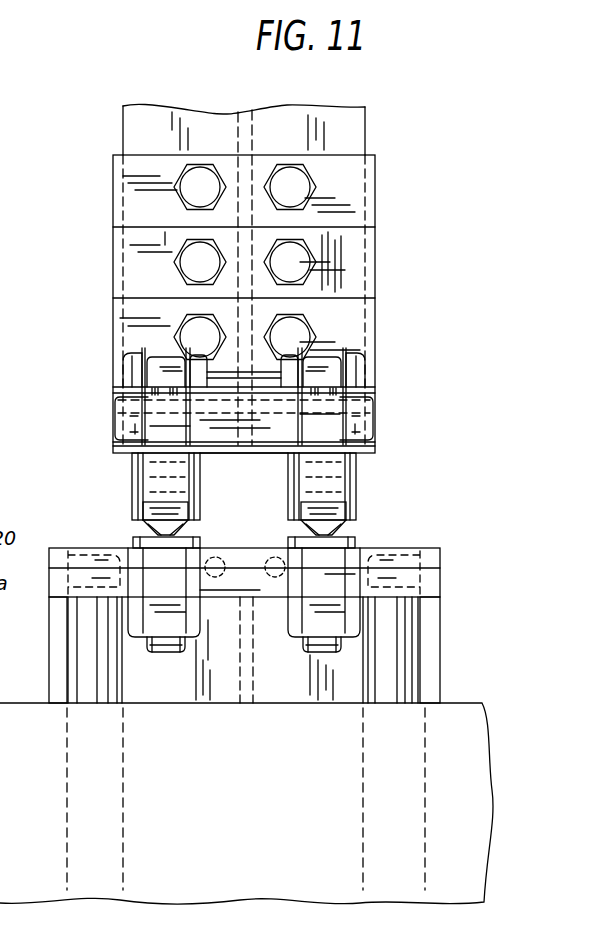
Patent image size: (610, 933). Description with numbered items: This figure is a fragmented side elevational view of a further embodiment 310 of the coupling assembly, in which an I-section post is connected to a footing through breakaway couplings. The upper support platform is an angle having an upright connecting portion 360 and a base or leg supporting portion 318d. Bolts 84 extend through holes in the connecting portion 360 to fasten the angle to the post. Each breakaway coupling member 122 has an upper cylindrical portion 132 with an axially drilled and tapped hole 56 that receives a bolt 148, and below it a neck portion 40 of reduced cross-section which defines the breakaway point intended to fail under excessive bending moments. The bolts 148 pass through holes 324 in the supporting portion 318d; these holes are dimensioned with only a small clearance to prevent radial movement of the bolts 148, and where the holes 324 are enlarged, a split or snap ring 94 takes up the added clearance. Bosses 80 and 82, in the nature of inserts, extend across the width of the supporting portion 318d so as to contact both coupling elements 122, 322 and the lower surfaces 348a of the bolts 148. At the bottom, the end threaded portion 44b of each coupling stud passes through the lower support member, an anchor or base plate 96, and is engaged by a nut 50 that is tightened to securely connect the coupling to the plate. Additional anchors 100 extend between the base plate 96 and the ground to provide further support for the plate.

The coupling assembly embodiment 310 is at (406, 315).
The upright connecting portion 360 is at (113, 237).
The bolts 84 is at (212, 184).
The bolt 148 is at (128, 355).
The lower surfaces of the bolts 348a is at (113, 377).
The boss 80 is at (373, 379).
The split or snap ring 94 is at (133, 413).
The base or leg supporting portion 318d is at (115, 421).
The holes 324 is at (115, 436).
The upper cylindrical portion 132 is at (132, 470).
The drilled and tapped hole 56 is at (303, 491).
The neck portion 40 is at (313, 537).
The boss 82 is at (234, 452).
The breakaway coupling member 122 is at (125, 524).
The coupling element 322 is at (377, 518).
The anchor or base plate 96 is at (411, 548).
The end threaded portion 44b is at (150, 653).
The nut 50 is at (200, 612).
The anchors 100 is at (77, 669).